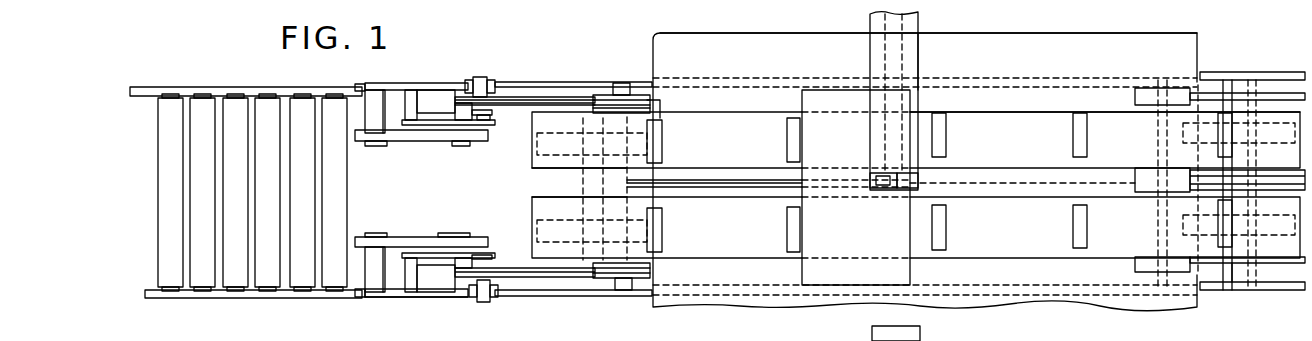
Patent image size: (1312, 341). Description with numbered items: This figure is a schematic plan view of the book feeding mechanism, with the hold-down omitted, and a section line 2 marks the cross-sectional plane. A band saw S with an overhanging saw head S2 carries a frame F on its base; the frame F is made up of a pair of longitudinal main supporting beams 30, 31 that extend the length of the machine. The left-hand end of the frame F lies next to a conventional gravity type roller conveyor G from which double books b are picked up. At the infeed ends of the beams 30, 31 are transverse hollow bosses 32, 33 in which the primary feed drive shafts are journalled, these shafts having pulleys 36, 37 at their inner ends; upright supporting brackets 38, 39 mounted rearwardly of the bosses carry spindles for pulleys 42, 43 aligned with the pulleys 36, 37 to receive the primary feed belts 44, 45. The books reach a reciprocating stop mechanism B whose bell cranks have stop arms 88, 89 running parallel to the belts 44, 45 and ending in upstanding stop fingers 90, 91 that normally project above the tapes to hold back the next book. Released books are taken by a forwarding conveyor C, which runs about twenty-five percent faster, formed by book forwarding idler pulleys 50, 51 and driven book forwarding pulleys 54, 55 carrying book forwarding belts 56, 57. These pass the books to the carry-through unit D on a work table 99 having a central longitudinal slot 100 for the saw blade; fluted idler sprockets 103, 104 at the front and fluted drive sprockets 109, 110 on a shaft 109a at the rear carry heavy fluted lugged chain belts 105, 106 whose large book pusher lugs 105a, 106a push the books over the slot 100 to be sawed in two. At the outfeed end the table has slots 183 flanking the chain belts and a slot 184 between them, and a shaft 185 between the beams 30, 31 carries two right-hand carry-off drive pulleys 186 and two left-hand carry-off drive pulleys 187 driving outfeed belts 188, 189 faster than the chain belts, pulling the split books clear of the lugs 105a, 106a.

The section line 2 is at (148, 190).
The longitudinal main supporting beam 30 is at (420, 300).
The longitudinal main supporting beam 31 is at (610, 84).
The transverse hollow boss 32 is at (385, 275).
The transverse hollow boss 33 is at (378, 98).
The pulley 36 is at (368, 236).
The pulley 37 is at (370, 146).
The upright supporting bracket 38 is at (452, 275).
The upright supporting bracket 39 is at (448, 100).
The pulley 42 is at (476, 234).
The pulley 43 is at (460, 146).
The primary feed belt 44 is at (425, 238).
The primary feed belt 45 is at (433, 141).
The book forwarding idler pulley 50 is at (492, 302).
The book forwarding idler pulley 51 is at (492, 98).
The driven book forwarding pulley 54 is at (606, 281).
The driven book forwarding pulley 55 is at (660, 88).
The book forwarding belt 56 is at (572, 278).
The book forwarding belt 57 is at (570, 98).
The stop arm 88 is at (418, 272).
The stop arm 89 is at (417, 112).
The stop finger 90 is at (490, 255).
The stop finger 91 is at (488, 121).
The work table 99 is at (797, 39).
The central longitudinal slot 100 is at (627, 184).
The fluted idler sprocket 103 is at (545, 220).
The fluted idler sprocket 104 is at (663, 108).
The fluted lugged chain belt 105 is at (1010, 229).
The book pusher lug 105a is at (662, 238).
The fluted lugged chain belt 106 is at (1030, 143).
The book pusher lug 106a is at (1087, 127).
The fluted drive sprocket 109 is at (1183, 230).
The shaft 109a is at (1246, 300).
The fluted drive sprocket 110 is at (1191, 133).
The slot 183 is at (1135, 96).
The slot 184 is at (1135, 181).
The shaft 185 is at (1168, 276).
The right-hand carry-off drive pulley 186 is at (1150, 192).
The left-hand carry-off drive pulley 187 is at (1145, 91).
The outfeed belt 188 is at (1268, 188).
The outfeed belt 189 is at (1203, 95).
The reciprocating stop mechanism B is at (511, 73).
The forwarding conveyor C is at (534, 94).
The carry-through unit D is at (916, 140).
The frame F is at (748, 20).
The gravity type roller conveyor G is at (210, 86).
The band saw S is at (929, 24).
The overhanging saw head S2 is at (920, 62).
The double book b is at (858, 233).